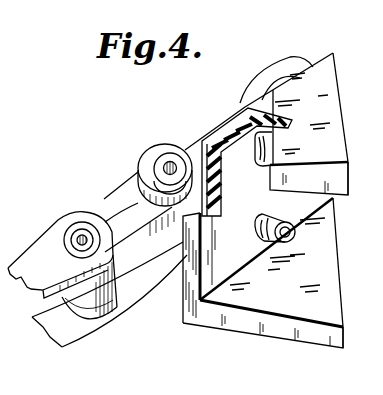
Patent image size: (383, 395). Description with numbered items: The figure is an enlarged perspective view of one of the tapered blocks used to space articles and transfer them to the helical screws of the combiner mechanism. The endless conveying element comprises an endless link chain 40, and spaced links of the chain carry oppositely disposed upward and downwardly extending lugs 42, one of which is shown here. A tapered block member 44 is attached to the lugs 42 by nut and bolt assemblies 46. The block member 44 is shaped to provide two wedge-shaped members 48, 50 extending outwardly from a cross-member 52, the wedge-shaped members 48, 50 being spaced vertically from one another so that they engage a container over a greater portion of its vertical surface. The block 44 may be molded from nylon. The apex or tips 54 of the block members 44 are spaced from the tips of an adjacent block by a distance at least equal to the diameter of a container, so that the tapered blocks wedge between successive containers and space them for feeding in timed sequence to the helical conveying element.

The endless link chain 40 is at (150, 147).
The lug 42 is at (207, 141).
The tapered block member 44 is at (339, 89).
The nut and bolt assembly 46 is at (256, 155).
The wedge-shaped member 48 is at (348, 143).
The wedge-shaped member 50 is at (343, 262).
The cross-member 52 is at (183, 290).
The apex or tip 54 is at (348, 181).